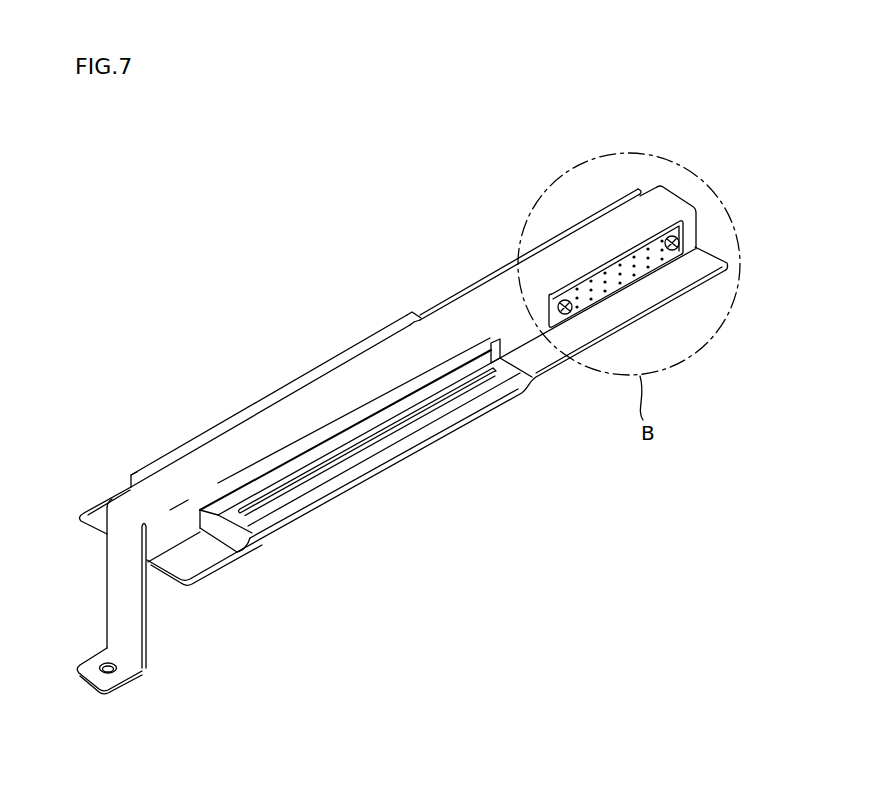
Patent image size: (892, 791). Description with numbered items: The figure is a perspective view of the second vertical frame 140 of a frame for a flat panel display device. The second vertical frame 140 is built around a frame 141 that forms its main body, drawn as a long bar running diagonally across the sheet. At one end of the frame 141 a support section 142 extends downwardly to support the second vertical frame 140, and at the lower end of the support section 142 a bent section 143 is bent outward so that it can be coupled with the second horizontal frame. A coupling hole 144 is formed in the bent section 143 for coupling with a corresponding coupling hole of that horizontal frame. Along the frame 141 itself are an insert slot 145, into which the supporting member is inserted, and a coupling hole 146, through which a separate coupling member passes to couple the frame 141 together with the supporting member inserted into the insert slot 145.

The second vertical frame 140 is at (268, 292).
The frame 141 is at (186, 476).
The support section 142 is at (118, 598).
The bent section 143 is at (88, 674).
The coupling hole 144 is at (104, 665).
The insert slot 145 is at (492, 343).
The coupling hole 146 is at (420, 419).